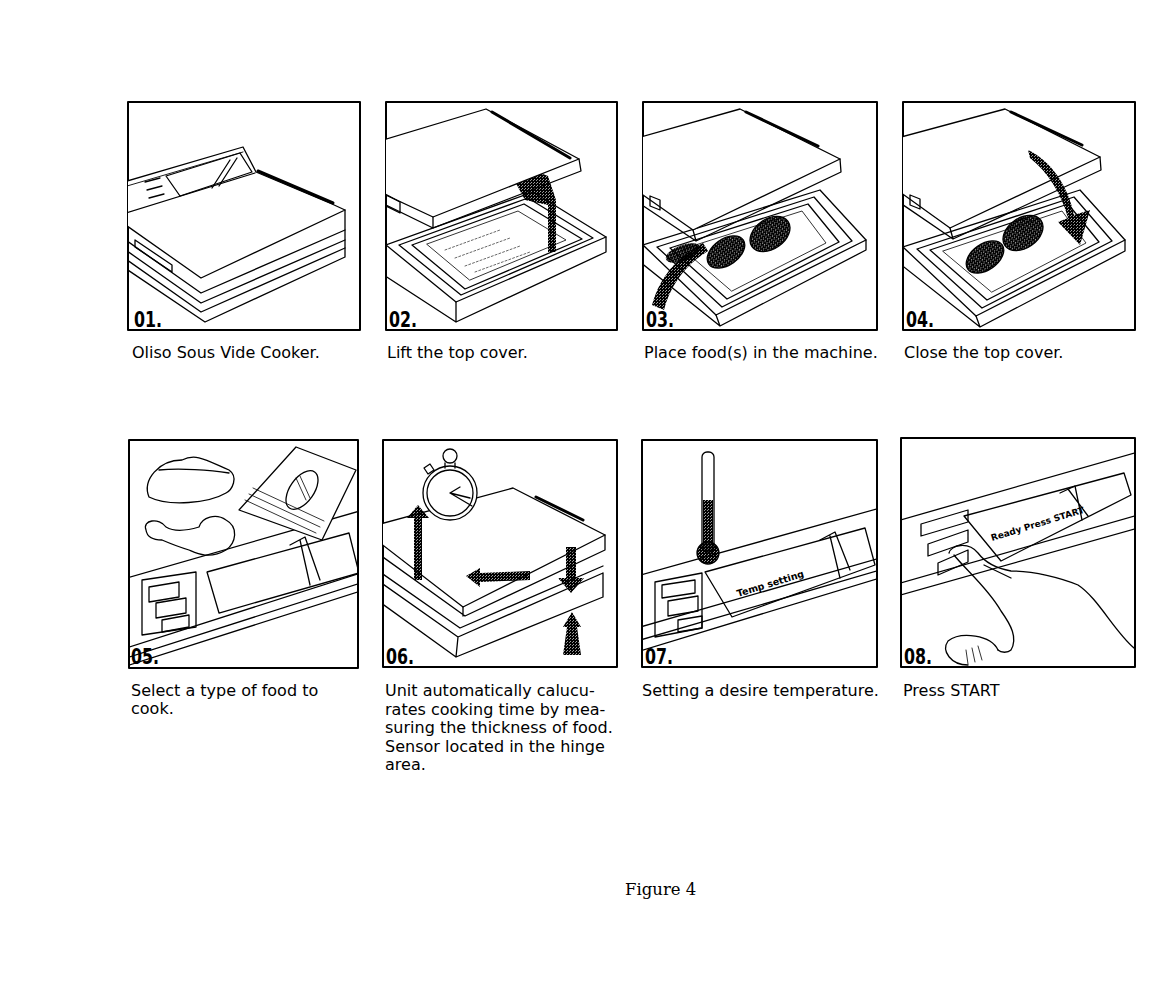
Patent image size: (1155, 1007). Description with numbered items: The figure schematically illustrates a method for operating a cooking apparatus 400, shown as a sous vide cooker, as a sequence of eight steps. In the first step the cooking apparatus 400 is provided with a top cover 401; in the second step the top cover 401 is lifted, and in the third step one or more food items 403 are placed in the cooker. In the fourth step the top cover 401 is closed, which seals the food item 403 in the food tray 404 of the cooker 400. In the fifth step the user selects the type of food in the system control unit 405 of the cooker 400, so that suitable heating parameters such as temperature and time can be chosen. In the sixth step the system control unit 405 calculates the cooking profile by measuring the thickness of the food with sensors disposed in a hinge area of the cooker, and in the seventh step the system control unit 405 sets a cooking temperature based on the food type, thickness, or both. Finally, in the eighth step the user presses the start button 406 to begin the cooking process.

The cooking apparatus 400 is at (257, 223).
The top cover 401 is at (462, 157).
The food item 403 is at (723, 237).
The food tray 404 is at (955, 247).
The system control unit 405 is at (192, 176).
The start button 406 is at (947, 553).